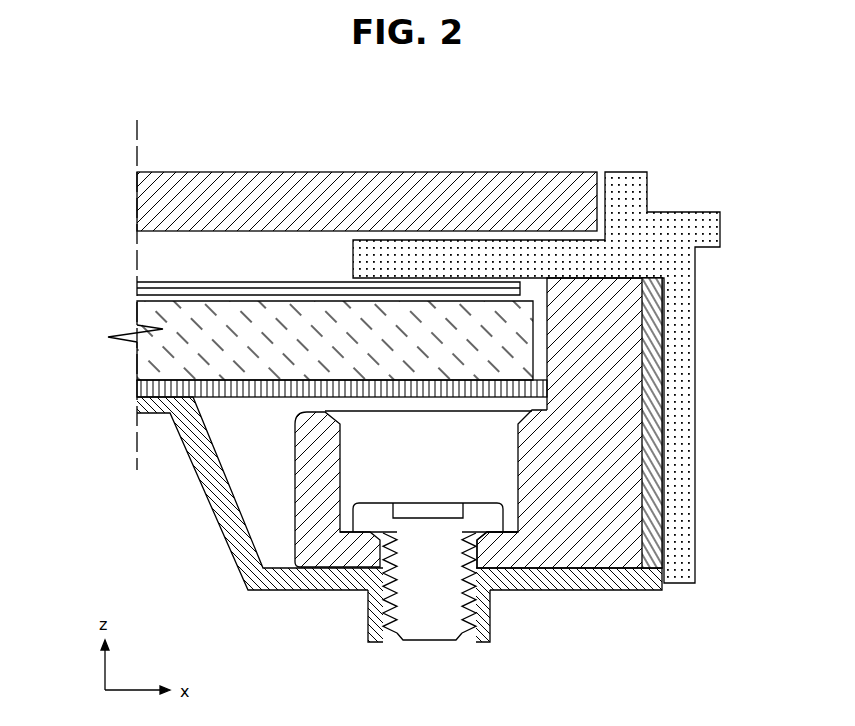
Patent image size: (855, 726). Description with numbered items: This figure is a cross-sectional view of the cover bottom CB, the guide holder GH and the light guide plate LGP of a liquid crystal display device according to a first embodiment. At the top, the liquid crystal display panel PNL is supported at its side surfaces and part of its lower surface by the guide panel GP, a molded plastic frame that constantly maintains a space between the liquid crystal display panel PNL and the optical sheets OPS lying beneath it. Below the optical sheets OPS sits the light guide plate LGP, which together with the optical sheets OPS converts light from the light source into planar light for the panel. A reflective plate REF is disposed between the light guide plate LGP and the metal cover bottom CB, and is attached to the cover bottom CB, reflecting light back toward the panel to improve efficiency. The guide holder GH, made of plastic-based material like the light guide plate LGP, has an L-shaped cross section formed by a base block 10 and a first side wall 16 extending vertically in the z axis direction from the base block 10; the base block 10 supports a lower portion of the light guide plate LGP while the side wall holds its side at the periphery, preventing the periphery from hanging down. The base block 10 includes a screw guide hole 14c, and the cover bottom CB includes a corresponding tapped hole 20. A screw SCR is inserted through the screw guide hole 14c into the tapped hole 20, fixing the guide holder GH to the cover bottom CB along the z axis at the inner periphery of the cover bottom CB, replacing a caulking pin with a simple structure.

The liquid crystal display panel PNL is at (140, 208).
The optical sheets OPS is at (299, 293).
The light guide plate LGP is at (137, 352).
The reflective plate REF is at (137, 388).
The cover bottom CB is at (305, 572).
The tapped hole 20 is at (390, 642).
The screw SCR is at (438, 630).
The screw guide hole 14c is at (483, 643).
The guide holder GH is at (560, 553).
The first side wall 16 is at (578, 346).
The guide panel GP is at (678, 428).
The base block 10 is at (578, 478).